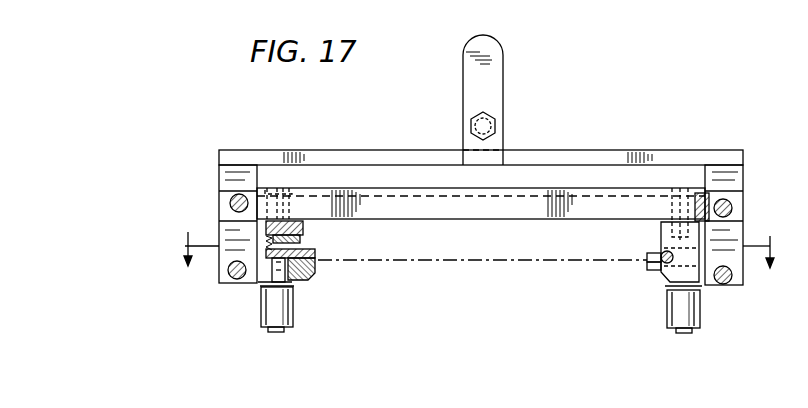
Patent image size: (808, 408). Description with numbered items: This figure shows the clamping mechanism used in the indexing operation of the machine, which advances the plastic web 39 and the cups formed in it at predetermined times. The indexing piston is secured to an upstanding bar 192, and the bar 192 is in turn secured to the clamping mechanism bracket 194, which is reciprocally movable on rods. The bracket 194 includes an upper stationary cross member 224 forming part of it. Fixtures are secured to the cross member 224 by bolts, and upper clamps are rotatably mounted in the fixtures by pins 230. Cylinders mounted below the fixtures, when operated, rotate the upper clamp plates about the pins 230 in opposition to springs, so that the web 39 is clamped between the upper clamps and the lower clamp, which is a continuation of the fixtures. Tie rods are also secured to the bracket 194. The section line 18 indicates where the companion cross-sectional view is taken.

The section line 18 is at (480, 249).
The web 39 is at (473, 265).
The upstanding bar 192 is at (475, 90).
The clamping mechanism bracket 194 is at (367, 139).
The upper stationary cross member 224 is at (413, 208).
The pin 230 is at (662, 254).